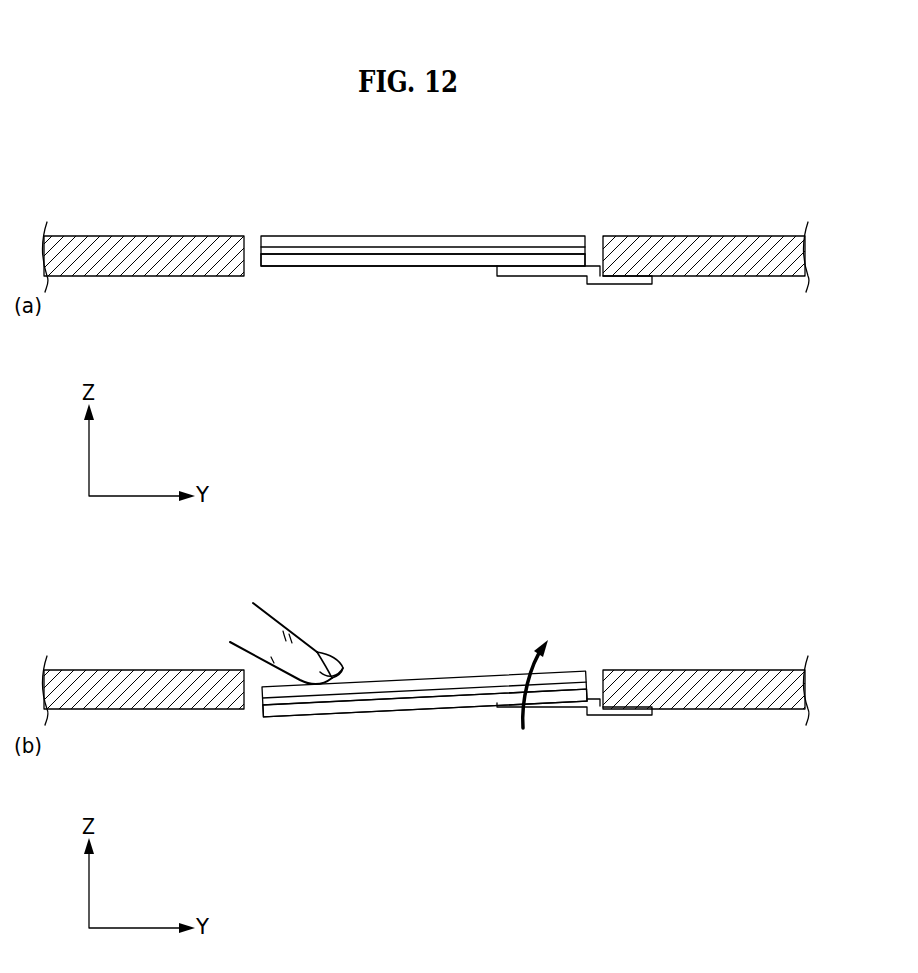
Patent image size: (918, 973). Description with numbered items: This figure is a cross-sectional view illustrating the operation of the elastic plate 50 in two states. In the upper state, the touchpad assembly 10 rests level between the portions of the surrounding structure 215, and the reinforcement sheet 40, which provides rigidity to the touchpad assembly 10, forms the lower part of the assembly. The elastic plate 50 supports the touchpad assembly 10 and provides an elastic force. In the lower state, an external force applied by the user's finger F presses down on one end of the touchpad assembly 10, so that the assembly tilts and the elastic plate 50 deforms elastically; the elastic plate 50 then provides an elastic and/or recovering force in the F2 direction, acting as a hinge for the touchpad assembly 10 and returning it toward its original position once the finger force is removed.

The frame / housing 215 is at (134, 248).
The touchpad assembly 10 is at (363, 241).
The reinforcement sheet 40 is at (314, 263).
The elastic plate 50 is at (621, 284).
The user's finger F is at (302, 645).
The F2 direction F2 is at (530, 700).